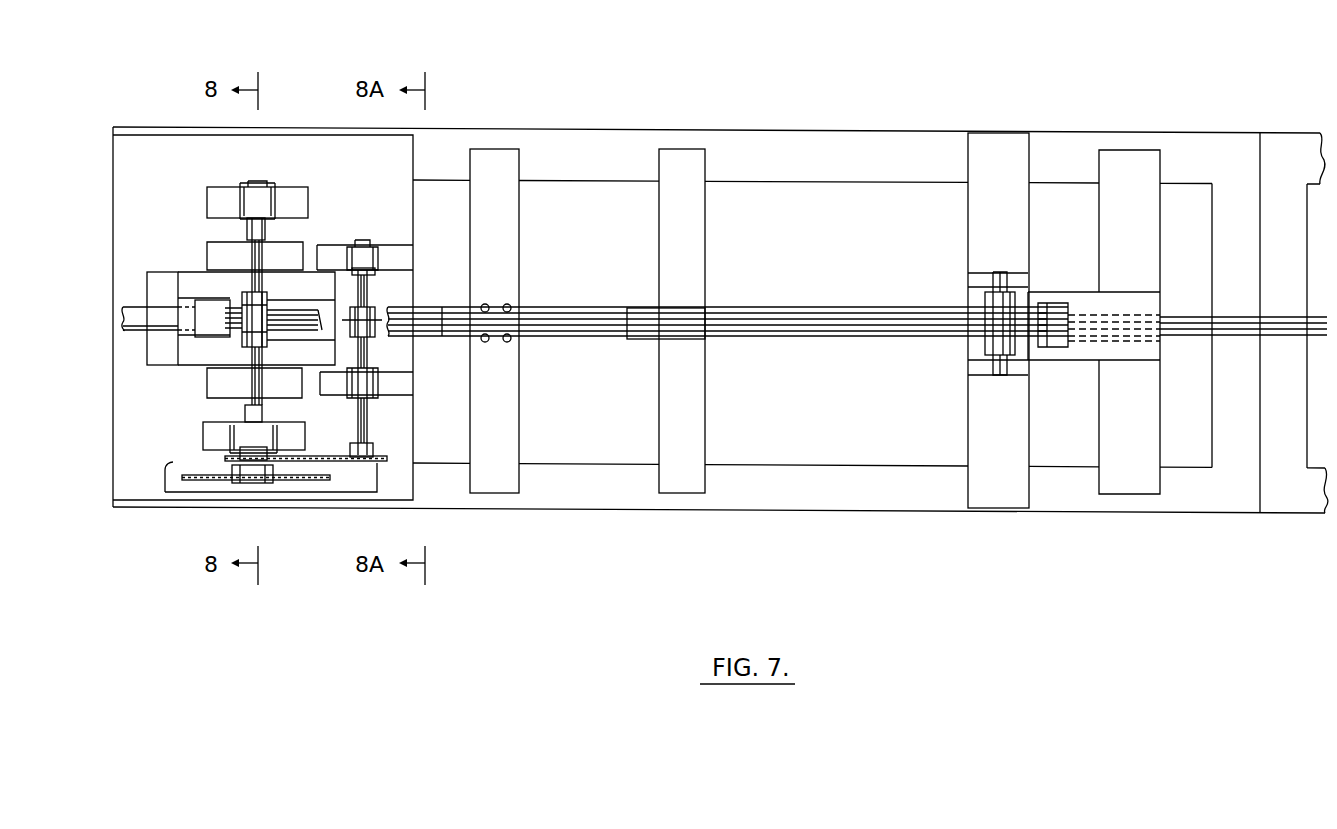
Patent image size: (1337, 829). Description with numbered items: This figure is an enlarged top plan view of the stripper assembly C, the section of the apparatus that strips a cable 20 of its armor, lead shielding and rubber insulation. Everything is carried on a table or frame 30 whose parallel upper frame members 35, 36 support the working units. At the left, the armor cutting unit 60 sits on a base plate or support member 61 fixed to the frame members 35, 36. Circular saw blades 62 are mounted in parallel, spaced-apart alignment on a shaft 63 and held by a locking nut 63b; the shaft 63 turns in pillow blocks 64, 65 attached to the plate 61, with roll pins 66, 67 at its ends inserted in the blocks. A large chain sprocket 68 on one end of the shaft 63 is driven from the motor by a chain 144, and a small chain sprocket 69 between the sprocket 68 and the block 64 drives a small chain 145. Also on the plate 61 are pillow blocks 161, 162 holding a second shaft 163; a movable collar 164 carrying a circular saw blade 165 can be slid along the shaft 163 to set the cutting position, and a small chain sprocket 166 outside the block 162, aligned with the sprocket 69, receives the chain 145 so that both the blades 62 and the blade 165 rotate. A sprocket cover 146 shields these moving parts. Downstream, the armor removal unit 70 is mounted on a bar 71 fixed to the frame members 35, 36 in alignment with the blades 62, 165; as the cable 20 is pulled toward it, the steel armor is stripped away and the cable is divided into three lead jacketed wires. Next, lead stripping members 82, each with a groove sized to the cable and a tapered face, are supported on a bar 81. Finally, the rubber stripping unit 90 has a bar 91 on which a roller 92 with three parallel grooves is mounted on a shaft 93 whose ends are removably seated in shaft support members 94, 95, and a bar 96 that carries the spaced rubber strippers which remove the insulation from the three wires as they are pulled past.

The stripper assembly C is at (828, 74).
The cable 20 is at (128, 310).
The table or frame 30 is at (607, 131).
The frame member 35 is at (612, 494).
The frame member 36 is at (545, 148).
The armor cutting unit 60 is at (286, 181).
The base plate or support member 61 is at (372, 190).
The circular saw blades 62 is at (274, 310).
The shaft 63 is at (252, 256).
The locking nut 63b is at (244, 304).
The pillow block 64 is at (205, 436).
The pillow block 65 is at (207, 199).
The roll pin 66 is at (262, 414).
The roll pin 67 is at (264, 229).
The large chain sprocket 68 is at (283, 485).
The small chain sprocket 69 is at (240, 449).
The armor removal unit 70 is at (527, 294).
The bar 71 is at (497, 231).
The bar 81 is at (687, 238).
The lead stripping members 82 is at (640, 308).
The rubber stripping unit 90 is at (1057, 288).
The bar 91 is at (978, 203).
The roller 92 is at (988, 303).
The shaft 93 is at (994, 272).
The shaft support member 94 is at (1019, 275).
The shaft support member 95 is at (1018, 366).
The bar 96 is at (1137, 494).
The chain 144 is at (185, 485).
The small chain 145 is at (322, 457).
The sprocket cover 146 is at (378, 492).
The pillow block 161 is at (400, 250).
The pillow block 162 is at (395, 383).
The shaft 163 is at (374, 280).
The movable collar 164 is at (377, 309).
The circular saw blade 165 is at (390, 314).
The small chain sprocket 166 is at (375, 451).